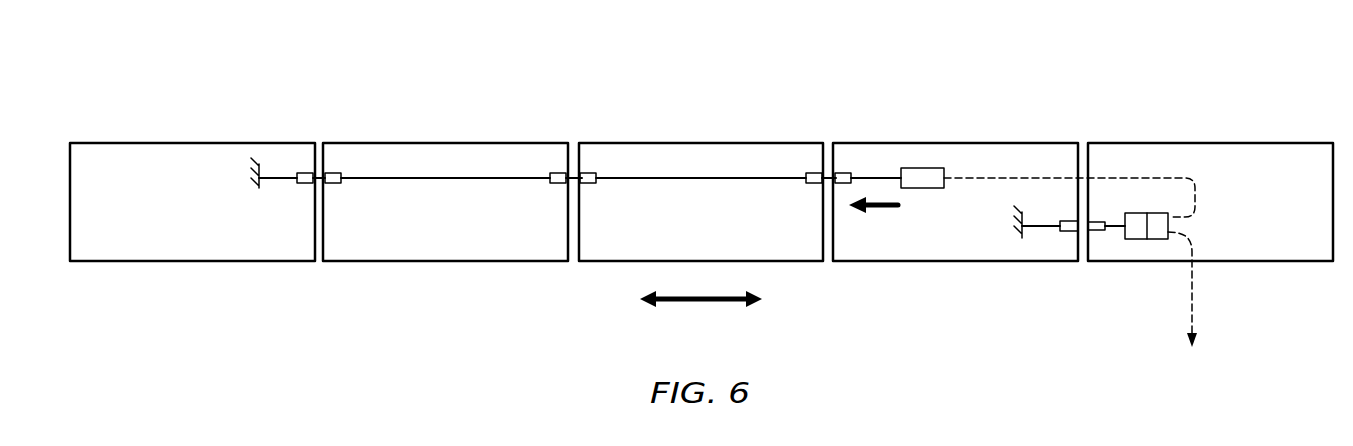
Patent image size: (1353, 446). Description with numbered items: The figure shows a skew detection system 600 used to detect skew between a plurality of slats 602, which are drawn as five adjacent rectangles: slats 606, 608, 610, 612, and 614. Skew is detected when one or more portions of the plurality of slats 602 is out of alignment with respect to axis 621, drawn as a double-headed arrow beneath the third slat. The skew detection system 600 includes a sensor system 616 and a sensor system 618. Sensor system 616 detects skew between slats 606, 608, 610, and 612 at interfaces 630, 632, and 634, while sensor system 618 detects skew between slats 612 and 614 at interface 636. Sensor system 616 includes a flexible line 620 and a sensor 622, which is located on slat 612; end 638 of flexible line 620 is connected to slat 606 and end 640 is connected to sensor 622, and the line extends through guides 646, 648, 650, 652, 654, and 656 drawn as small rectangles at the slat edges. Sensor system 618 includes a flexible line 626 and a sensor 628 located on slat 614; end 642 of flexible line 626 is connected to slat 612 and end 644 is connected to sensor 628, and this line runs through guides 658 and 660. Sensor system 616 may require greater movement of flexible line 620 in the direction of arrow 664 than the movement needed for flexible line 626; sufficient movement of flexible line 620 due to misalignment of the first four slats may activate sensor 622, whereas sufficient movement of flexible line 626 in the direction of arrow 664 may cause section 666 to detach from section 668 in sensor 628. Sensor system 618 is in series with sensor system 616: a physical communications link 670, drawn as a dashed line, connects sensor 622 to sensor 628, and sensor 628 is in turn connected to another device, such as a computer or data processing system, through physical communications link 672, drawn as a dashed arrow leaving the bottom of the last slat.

The skew detection system 600 is at (477, 73).
The plurality of slats 602 is at (119, 130).
The slat 606 is at (192, 143).
The slat 608 is at (445, 143).
The slat 610 is at (701, 143).
The slat 612 is at (1023, 143).
The slat 614 is at (1277, 143).
The sensor system 616 is at (968, 160).
The sensor system 618 is at (1209, 216).
The flexible line 620 is at (665, 181).
The axis 621 is at (701, 304).
The sensor 622 is at (921, 168).
The flexible line 626 is at (1040, 228).
The sensor 628 is at (1168, 225).
The interface 630 is at (315, 272).
The interface 632 is at (570, 272).
The interface 634 is at (832, 275).
The interface 636 is at (1079, 275).
The end 638 is at (258, 190).
The end 640 is at (882, 177).
The end 642 is at (1017, 238).
The end 644 is at (1112, 231).
The guide 646 is at (299, 172).
The guide 648 is at (340, 172).
The guide 650 is at (557, 172).
The guide 652 is at (594, 172).
The guide 654 is at (812, 172).
The guide 656 is at (846, 172).
The guide 658 is at (1068, 221).
The guide 660 is at (1097, 232).
The arrow 664 is at (880, 209).
The section 666 is at (1140, 240).
The section 668 is at (1158, 213).
The physical communications link 670 is at (1105, 177).
The physical communications link 672 is at (1193, 305).